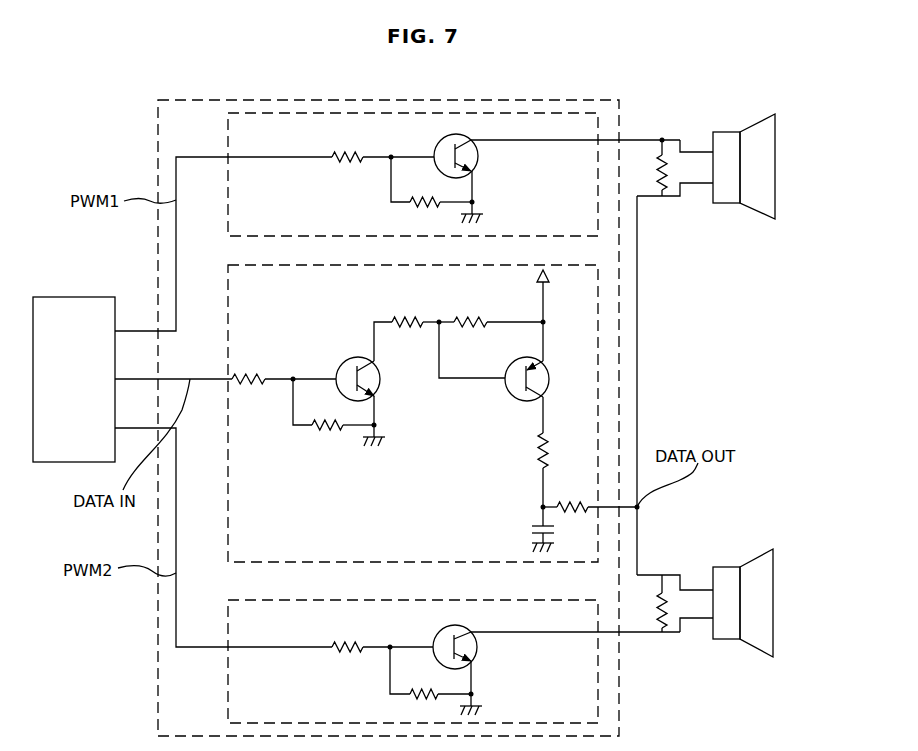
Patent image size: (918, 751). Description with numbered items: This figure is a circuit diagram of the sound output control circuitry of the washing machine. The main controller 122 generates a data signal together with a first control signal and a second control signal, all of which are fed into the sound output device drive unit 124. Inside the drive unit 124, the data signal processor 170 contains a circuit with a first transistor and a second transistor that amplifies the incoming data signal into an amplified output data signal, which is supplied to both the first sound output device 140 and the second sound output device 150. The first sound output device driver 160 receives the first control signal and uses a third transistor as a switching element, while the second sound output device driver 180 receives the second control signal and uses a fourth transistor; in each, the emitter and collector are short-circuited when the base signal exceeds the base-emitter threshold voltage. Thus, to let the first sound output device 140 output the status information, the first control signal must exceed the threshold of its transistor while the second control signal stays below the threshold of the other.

The main controller 122 is at (48, 297).
The sound output device drive unit 124 is at (150, 106).
The first sound output device 140 is at (775, 165).
The second sound output device 150 is at (773, 605).
The first sound output device driver 160 is at (228, 132).
The data signal processor 170 is at (228, 297).
The second sound output device driver 180 is at (228, 688).